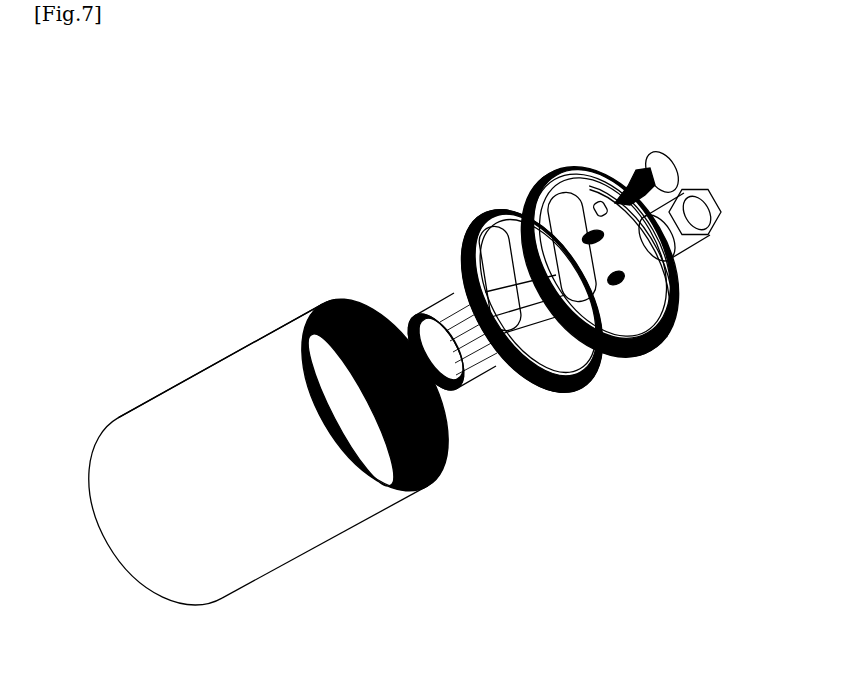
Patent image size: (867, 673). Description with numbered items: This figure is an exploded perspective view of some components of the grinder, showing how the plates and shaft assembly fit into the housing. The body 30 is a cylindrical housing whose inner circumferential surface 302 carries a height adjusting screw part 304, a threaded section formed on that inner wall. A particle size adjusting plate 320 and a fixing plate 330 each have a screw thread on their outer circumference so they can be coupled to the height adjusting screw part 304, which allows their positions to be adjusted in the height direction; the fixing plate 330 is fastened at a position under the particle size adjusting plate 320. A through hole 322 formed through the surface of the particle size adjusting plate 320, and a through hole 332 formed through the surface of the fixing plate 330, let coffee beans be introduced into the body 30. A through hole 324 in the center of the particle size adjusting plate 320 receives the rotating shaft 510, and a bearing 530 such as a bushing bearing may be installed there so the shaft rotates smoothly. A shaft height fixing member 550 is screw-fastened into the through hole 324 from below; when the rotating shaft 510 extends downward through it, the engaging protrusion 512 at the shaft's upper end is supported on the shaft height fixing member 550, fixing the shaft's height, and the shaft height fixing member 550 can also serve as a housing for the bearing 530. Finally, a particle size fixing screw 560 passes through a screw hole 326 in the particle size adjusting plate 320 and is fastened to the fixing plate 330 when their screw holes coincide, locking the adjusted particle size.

The body 30 is at (240, 452).
The inner circumferential surface 302 is at (362, 420).
The height adjusting screw part 304 is at (319, 308).
The shaft height fixing member 550 is at (469, 356).
The fixing plate 330 is at (478, 234).
The through hole 332 is at (552, 354).
The particle size adjusting plate 320 is at (548, 192).
The through hole 322 is at (650, 356).
The through hole 324 is at (612, 356).
The screw hole 326 is at (598, 203).
The bearing 530 is at (673, 263).
The rotating shaft 510 is at (672, 253).
The engaging protrusion 512 is at (705, 240).
The particle size fixing screw 560 is at (651, 156).